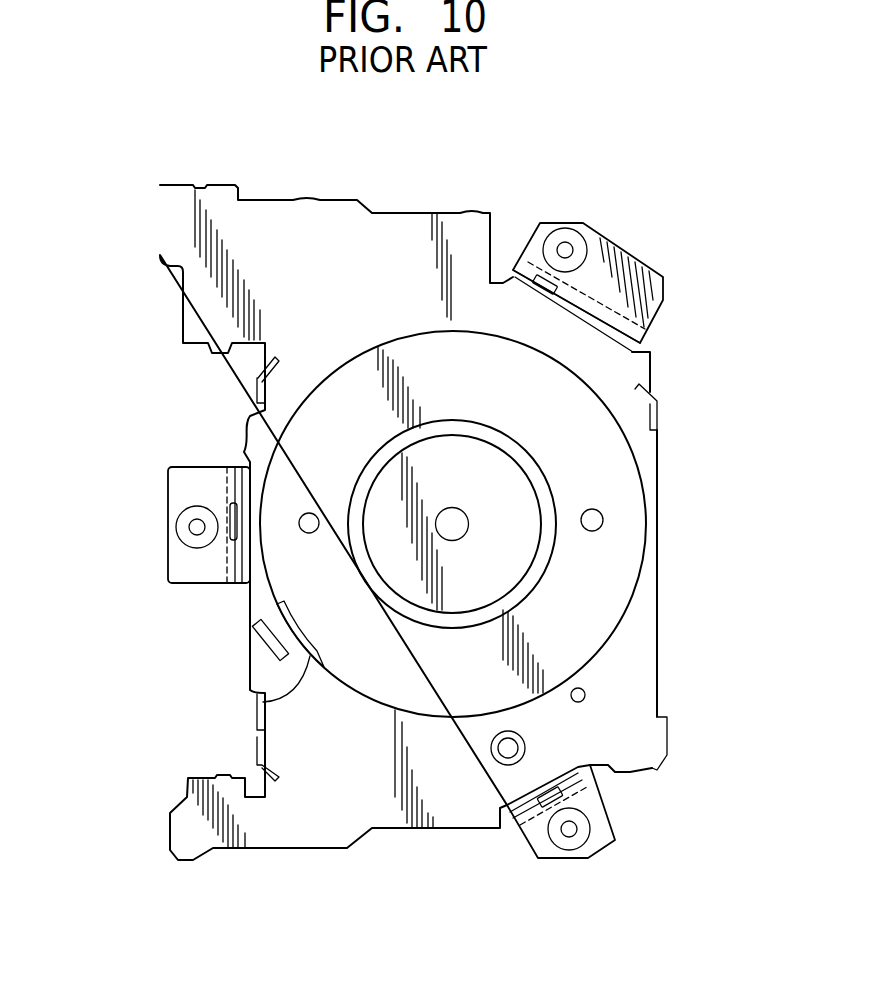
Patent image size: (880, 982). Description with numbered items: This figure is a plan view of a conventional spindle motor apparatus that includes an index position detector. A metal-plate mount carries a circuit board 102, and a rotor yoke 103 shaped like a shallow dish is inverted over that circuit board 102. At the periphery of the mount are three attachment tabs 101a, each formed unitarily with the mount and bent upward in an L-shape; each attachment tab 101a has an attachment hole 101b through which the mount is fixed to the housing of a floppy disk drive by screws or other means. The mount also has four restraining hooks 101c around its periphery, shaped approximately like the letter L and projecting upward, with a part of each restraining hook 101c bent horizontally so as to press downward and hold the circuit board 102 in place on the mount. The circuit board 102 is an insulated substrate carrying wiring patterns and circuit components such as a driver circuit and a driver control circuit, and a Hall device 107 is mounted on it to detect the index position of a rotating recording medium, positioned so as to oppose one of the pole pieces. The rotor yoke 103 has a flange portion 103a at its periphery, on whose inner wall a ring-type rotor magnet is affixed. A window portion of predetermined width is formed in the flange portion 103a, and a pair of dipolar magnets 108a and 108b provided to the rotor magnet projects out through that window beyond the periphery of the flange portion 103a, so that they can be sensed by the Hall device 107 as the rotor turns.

The attachment tab 101a is at (647, 277).
The attachment hole 101b is at (565, 245).
The restraining hook 101c is at (257, 374).
The circuit board 102 is at (275, 233).
The rotor yoke 103 is at (310, 435).
The flange portion 103a is at (422, 333).
The Hall device 107 is at (256, 640).
The dipolar magnet 108a is at (263, 701).
The dipolar magnet 108b is at (273, 604).